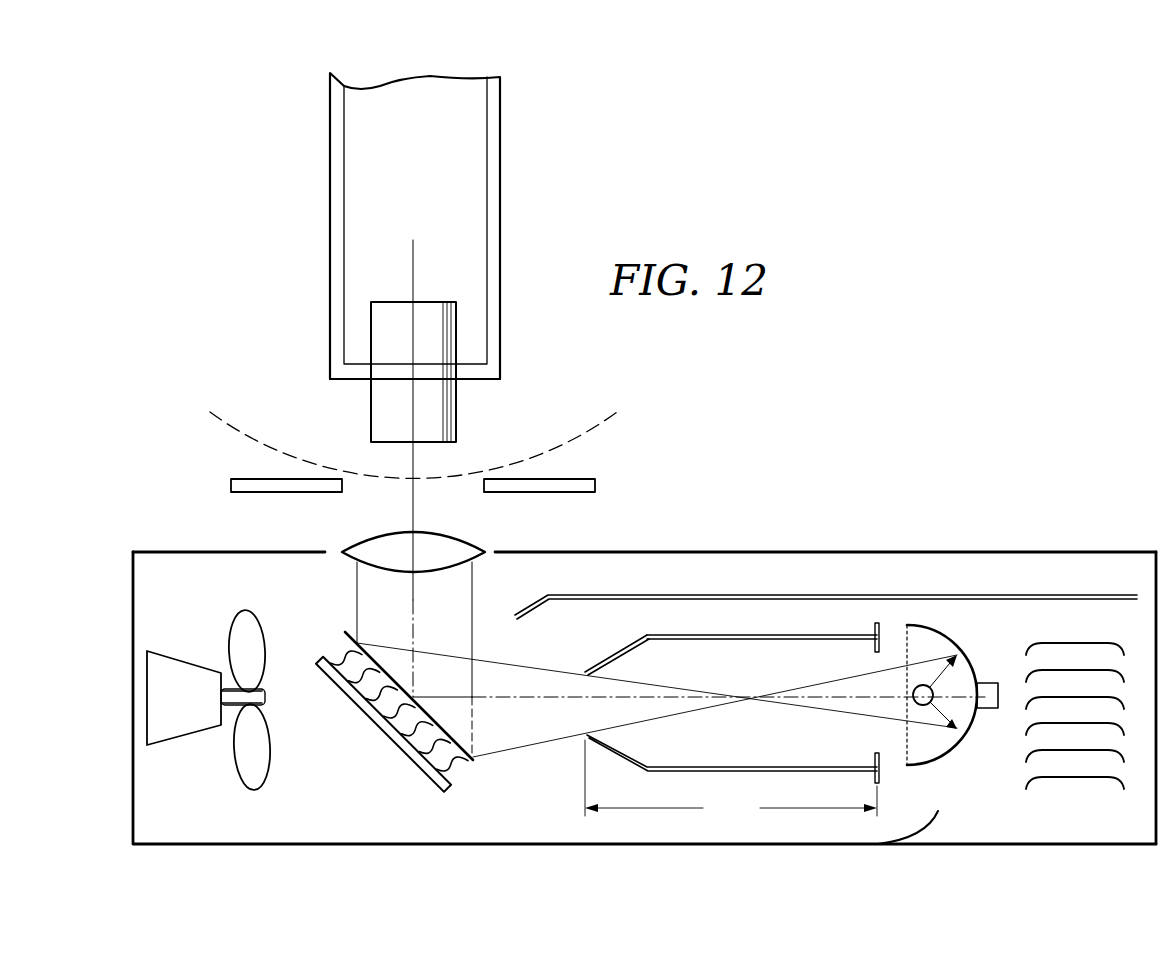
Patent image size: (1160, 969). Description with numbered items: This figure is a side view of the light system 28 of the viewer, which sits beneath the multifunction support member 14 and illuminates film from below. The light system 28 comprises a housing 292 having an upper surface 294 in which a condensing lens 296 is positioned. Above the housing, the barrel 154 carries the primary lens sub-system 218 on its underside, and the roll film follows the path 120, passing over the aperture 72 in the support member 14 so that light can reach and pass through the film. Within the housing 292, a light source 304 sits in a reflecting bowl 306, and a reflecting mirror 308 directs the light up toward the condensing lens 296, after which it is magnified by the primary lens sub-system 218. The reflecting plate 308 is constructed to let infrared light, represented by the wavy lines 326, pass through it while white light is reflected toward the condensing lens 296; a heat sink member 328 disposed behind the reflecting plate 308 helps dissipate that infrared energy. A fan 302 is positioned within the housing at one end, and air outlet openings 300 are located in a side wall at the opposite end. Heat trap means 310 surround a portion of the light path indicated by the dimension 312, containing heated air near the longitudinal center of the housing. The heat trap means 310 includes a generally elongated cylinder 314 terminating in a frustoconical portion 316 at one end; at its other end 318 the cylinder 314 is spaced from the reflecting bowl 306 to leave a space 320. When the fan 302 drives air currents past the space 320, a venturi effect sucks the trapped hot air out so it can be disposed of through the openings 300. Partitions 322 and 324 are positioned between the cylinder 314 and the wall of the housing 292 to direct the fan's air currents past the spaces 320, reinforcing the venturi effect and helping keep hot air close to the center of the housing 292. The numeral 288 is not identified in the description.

The barrel 154 is at (500, 160).
The primary lens sub-system 218 is at (383, 404).
The path of roll film 120 is at (252, 448).
The multifunction support member 14 is at (270, 492).
The aperture 72 is at (397, 493).
The condensing lens 296 is at (471, 541).
The upper surface 294 is at (600, 528).
The light system 28 is at (690, 510).
The housing 292 is at (846, 506).
The housing wall 288 is at (1100, 566).
The fan 302 is at (238, 778).
The reflecting mirror 308 is at (448, 727).
The heat sink member 328 is at (400, 752).
The wavy lines 326 is at (468, 765).
The partition 322 is at (775, 593).
The elongated cylinder 314 is at (826, 618).
The frustoconical portion 316 is at (603, 658).
The heat trap means 310 is at (620, 636).
The end of cylinder 318 is at (880, 632).
The space 320 is at (892, 650).
The reflecting bowl 306 is at (960, 653).
The light source 304 is at (912, 697).
The dimension 312 is at (731, 782).
The partition 324 is at (940, 812).
The air outlet openings 300 is at (1108, 622).